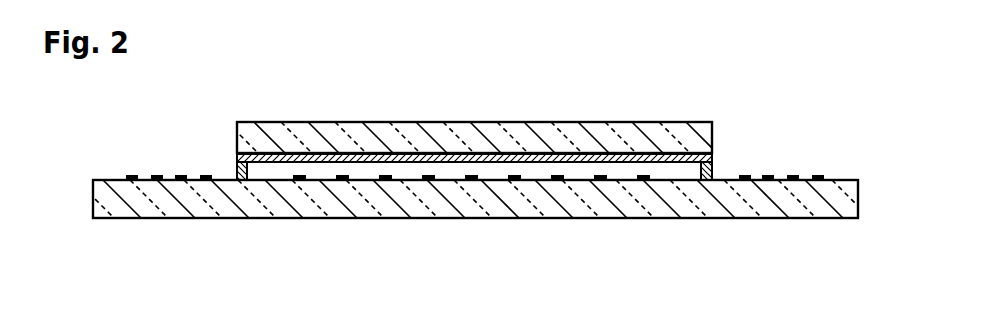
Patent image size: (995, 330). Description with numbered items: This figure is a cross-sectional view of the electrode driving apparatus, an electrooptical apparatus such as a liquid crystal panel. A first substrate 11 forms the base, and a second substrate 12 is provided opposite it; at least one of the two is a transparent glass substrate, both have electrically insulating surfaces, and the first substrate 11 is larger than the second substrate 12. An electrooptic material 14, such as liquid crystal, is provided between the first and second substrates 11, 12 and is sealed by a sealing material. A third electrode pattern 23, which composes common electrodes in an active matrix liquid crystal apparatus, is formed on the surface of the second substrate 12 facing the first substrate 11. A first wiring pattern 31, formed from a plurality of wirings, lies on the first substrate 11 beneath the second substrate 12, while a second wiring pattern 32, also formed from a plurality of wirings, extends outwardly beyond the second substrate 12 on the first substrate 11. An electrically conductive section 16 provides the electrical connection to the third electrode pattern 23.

The first substrate 11 is at (555, 212).
The second substrate 12 is at (531, 137).
The electrooptic material 14 is at (583, 177).
The electrically conductive section 16 is at (236, 175).
The third electrode pattern 23 is at (713, 166).
The first wiring pattern 31 is at (386, 181).
The second wiring pattern 32 is at (215, 177).